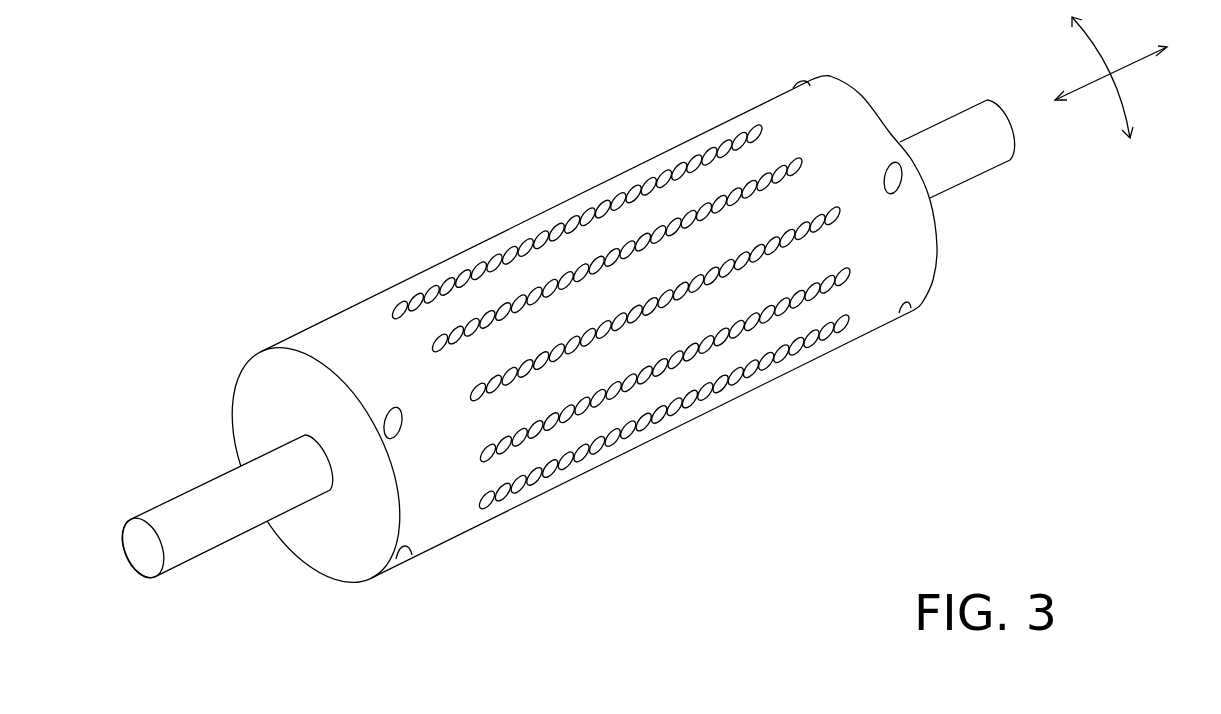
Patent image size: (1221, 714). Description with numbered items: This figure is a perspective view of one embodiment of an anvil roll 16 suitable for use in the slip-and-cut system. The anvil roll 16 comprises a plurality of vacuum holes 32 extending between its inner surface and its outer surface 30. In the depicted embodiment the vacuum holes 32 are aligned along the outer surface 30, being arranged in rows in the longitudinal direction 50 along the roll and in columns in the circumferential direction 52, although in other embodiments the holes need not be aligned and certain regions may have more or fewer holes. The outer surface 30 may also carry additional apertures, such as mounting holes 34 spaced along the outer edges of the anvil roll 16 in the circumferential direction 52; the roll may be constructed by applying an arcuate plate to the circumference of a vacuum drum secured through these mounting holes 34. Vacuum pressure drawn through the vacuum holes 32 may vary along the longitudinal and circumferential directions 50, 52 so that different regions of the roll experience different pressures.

The anvil roll 16 is at (564, 340).
The outer surface 30 is at (367, 317).
The vacuum holes 32 is at (653, 298).
The mounting holes 34 is at (812, 79).
The longitudinal direction 50 is at (1138, 63).
The circumferential direction 52 is at (1123, 100).